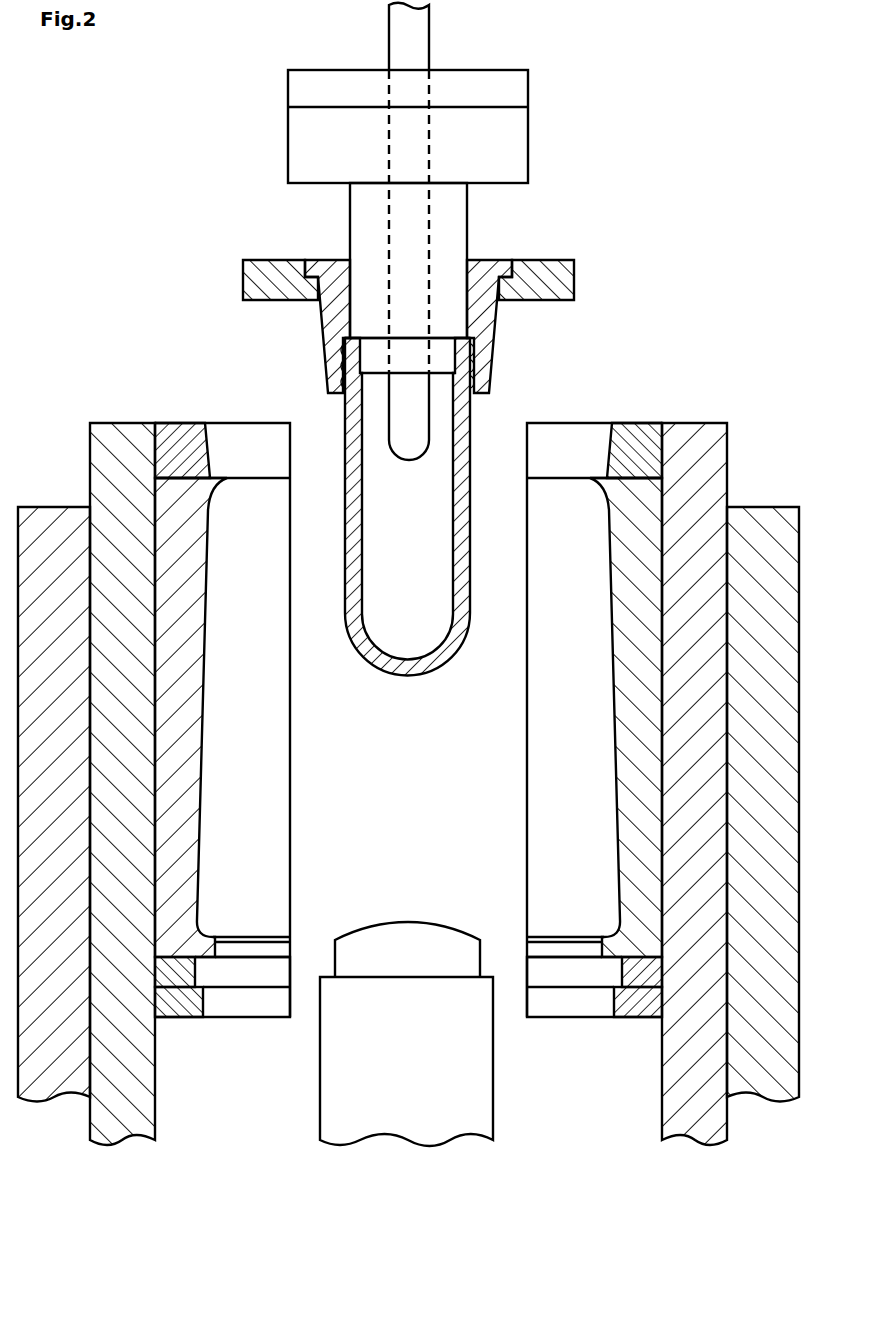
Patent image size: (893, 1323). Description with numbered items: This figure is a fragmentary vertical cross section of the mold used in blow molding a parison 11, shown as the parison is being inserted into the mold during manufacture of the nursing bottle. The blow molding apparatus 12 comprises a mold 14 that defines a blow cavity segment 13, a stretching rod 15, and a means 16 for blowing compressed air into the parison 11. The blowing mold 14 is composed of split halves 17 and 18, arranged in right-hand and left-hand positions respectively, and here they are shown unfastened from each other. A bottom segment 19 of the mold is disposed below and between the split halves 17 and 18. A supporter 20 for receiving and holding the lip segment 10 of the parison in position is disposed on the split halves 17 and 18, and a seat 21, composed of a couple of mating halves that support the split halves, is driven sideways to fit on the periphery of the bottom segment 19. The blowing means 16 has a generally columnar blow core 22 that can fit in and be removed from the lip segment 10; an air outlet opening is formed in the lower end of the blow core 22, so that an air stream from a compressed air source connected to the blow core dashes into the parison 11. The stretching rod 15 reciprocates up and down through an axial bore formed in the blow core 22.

The lip segment 10 is at (478, 318).
The parison 11 is at (432, 672).
The blow molding apparatus 12 is at (207, 328).
The blow cavity segment 13 is at (253, 808).
The mold 14 is at (665, 423).
The stretching rod 15 is at (411, 445).
The means for blowing compressed air 16 is at (375, 352).
The split half 17 is at (175, 497).
The split half 18 is at (643, 520).
The bottom segment 19 is at (380, 953).
The supporter 20 is at (633, 425).
The seat 21 is at (178, 1005).
The blow core 22 is at (458, 203).